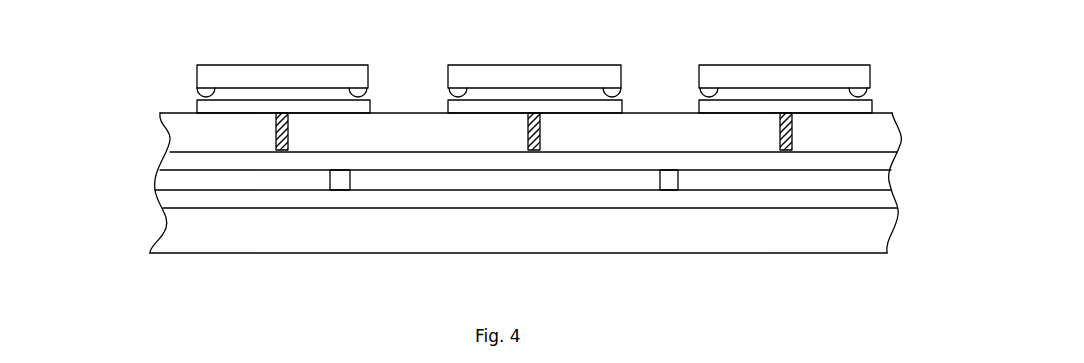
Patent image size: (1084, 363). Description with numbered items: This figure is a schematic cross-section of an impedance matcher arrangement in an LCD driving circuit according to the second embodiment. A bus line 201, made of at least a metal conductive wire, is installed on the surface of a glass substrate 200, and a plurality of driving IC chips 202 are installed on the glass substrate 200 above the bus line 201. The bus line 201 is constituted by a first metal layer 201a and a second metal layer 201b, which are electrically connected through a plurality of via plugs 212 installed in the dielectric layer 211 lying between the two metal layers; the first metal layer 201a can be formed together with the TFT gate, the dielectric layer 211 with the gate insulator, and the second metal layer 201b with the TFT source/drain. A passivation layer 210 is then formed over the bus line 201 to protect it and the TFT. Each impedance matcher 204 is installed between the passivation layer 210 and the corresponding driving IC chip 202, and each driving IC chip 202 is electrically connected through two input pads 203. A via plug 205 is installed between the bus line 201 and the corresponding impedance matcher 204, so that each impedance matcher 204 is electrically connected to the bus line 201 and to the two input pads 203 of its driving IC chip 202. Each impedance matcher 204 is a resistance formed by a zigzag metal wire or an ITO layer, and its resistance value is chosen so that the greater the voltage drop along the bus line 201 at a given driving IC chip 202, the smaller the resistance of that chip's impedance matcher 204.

The glass substrate 200 is at (553, 243).
The bus line 201 is at (90, 185).
The first metal layer 201a is at (178, 203).
The second metal layer 201b is at (176, 164).
The driving IC chip 202 is at (295, 72).
The input pad 203 is at (197, 94).
The impedance matcher 204 is at (200, 107).
The via plug 205 is at (276, 137).
The passivation layer 210 is at (882, 128).
The dielectric layer 211 is at (878, 180).
The via plug 212 is at (343, 182).